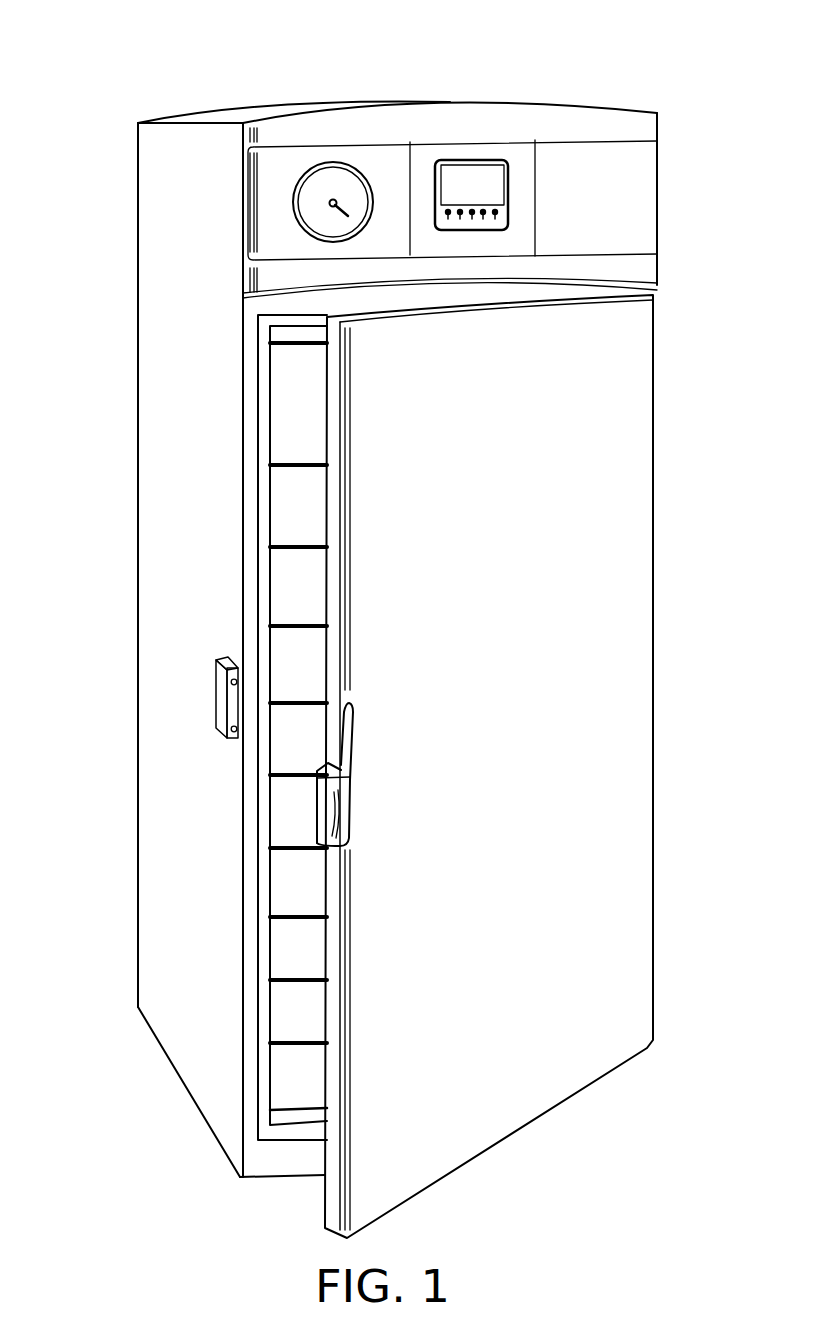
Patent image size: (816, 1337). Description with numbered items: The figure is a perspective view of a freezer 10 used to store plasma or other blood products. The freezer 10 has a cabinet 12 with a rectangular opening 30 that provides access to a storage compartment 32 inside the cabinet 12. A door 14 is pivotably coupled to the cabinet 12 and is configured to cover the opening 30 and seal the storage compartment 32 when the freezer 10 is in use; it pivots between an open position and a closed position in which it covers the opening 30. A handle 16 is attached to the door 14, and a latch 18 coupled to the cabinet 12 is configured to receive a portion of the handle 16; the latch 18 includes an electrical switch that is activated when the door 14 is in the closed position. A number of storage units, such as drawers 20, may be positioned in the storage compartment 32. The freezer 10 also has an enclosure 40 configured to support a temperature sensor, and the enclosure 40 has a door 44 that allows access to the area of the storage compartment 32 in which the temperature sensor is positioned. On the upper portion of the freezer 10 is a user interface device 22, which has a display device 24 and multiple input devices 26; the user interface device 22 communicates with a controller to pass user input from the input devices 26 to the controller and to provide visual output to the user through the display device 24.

The freezer 10 is at (700, 93).
The cabinet 12 is at (170, 448).
The door 14 is at (612, 493).
The handle 16 is at (350, 742).
The latch 18 is at (210, 695).
The drawers 20 is at (292, 1005).
The user interface device 22 is at (518, 158).
The display device 24 is at (450, 165).
The input devices 26 is at (495, 220).
The rectangular opening 30 is at (260, 567).
The storage compartment 32 is at (282, 601).
The enclosure 40 is at (288, 420).
The door 44 is at (302, 375).